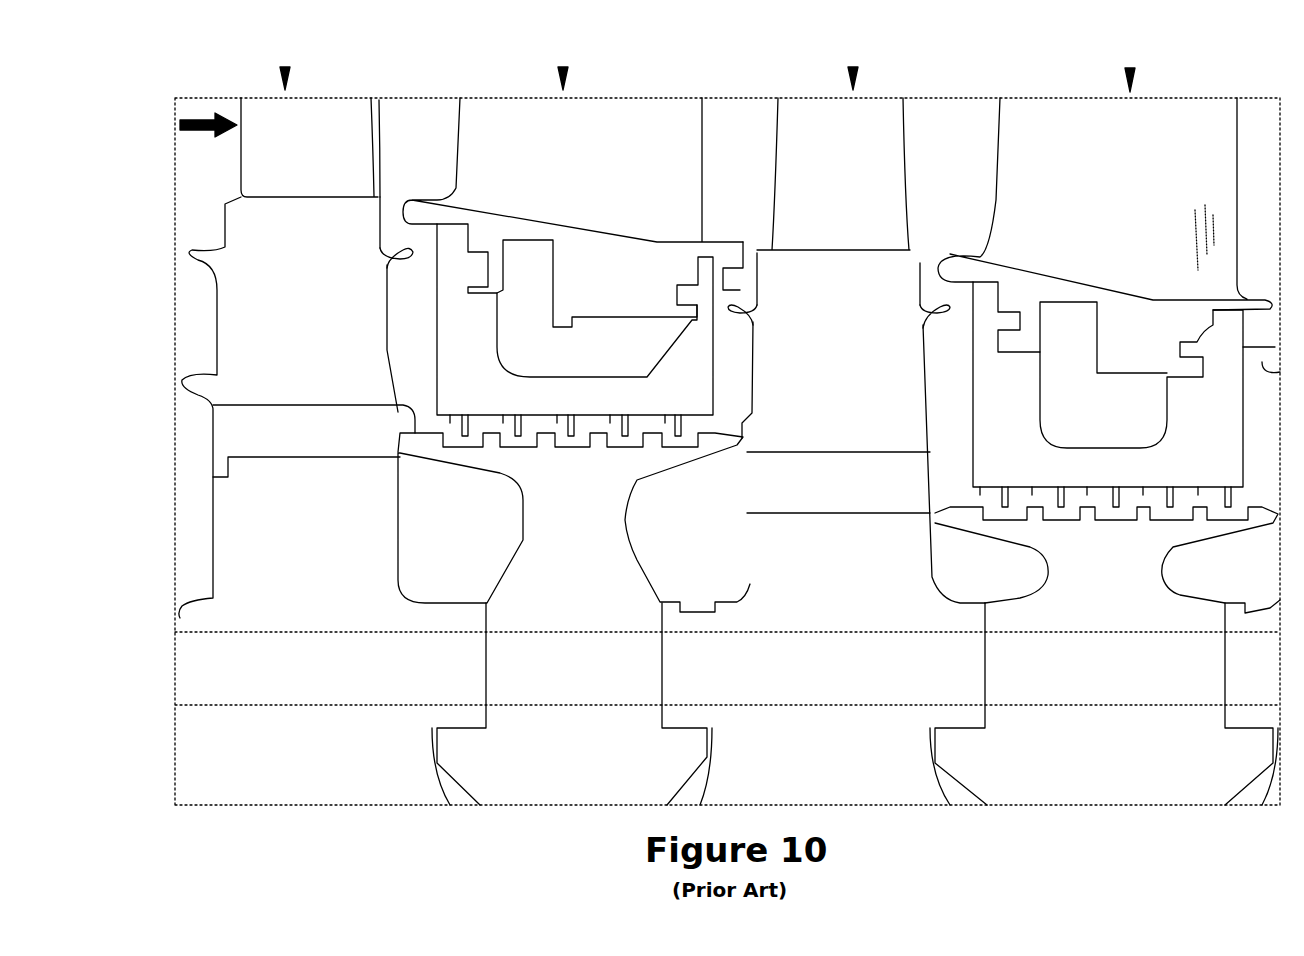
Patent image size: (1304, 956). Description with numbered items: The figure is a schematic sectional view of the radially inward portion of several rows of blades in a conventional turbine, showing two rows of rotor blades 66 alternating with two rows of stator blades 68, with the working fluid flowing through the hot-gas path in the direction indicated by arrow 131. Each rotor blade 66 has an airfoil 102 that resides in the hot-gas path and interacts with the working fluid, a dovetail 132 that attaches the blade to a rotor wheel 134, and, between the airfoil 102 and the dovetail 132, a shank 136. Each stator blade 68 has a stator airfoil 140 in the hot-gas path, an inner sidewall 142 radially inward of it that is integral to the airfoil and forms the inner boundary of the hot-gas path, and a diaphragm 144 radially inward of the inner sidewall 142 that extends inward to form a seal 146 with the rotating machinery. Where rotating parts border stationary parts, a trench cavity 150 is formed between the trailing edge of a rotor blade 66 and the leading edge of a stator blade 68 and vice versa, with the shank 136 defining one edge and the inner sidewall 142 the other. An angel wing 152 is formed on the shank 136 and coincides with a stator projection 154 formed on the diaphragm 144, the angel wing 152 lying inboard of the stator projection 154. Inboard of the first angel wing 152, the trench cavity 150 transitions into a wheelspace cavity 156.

The arrow 131 is at (204, 118).
The rotor blade 66 is at (287, 68).
The stator blade 68 is at (563, 68).
The airfoil 102 is at (335, 161).
The stator airfoil 140 is at (601, 173).
The inner sidewall 142 is at (635, 285).
The diaphragm 144 is at (701, 399).
The seal 146 is at (566, 433).
The trench cavity 150 is at (402, 233).
The angel wing 152 is at (380, 253).
The stator projection 154 is at (437, 223).
The wheelspace cavity 156 is at (418, 333).
The shank 136 is at (323, 308).
The dovetail 132 is at (328, 443).
The rotor wheel 134 is at (320, 548).